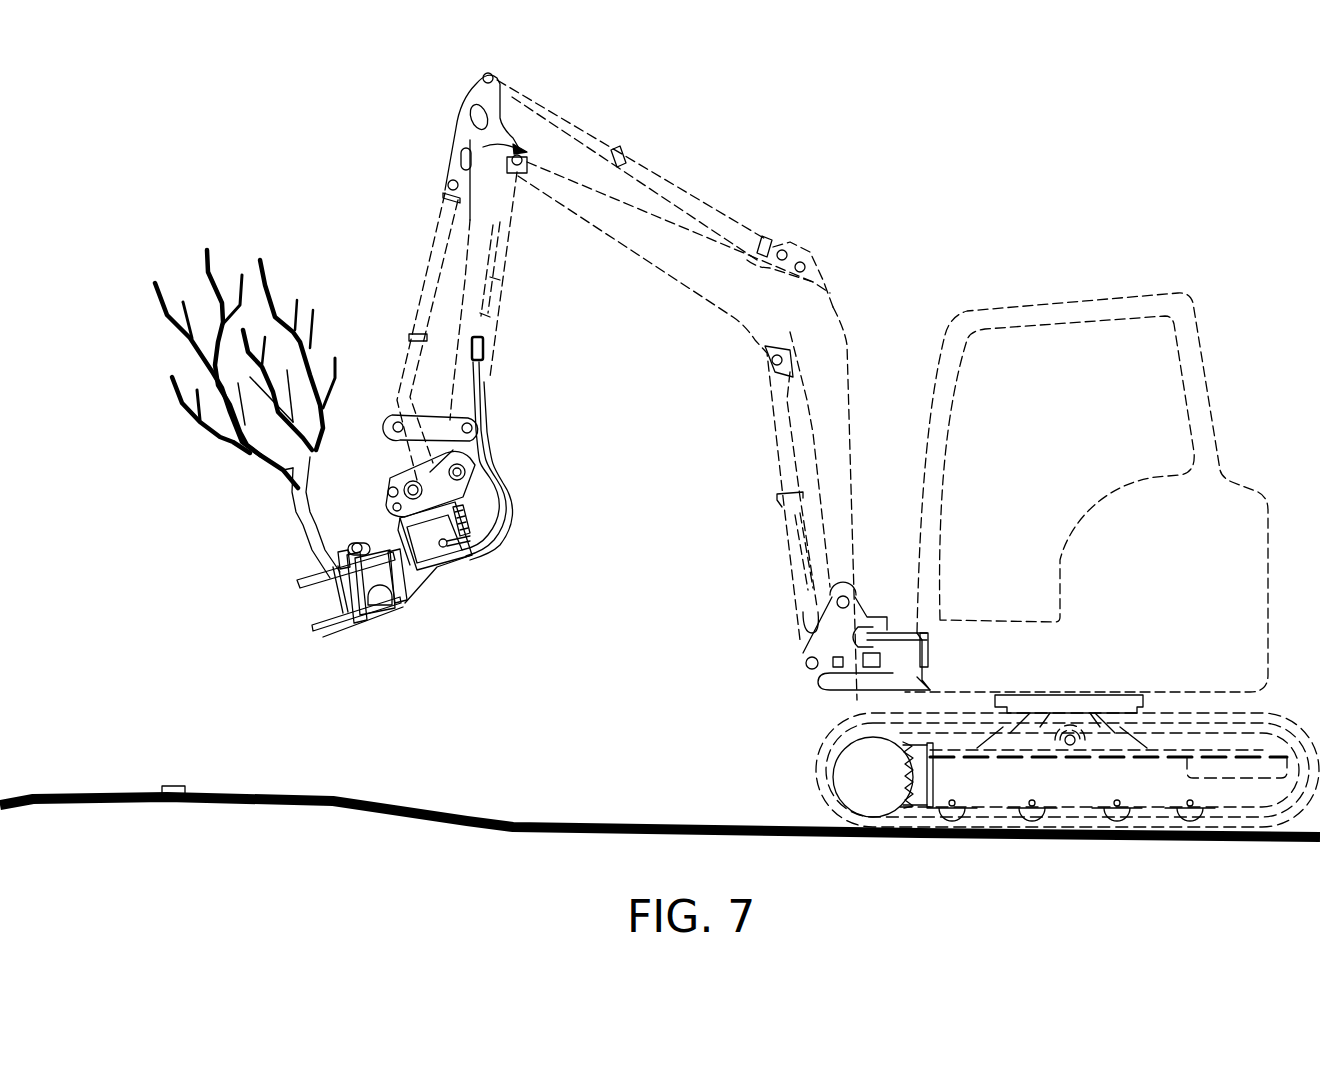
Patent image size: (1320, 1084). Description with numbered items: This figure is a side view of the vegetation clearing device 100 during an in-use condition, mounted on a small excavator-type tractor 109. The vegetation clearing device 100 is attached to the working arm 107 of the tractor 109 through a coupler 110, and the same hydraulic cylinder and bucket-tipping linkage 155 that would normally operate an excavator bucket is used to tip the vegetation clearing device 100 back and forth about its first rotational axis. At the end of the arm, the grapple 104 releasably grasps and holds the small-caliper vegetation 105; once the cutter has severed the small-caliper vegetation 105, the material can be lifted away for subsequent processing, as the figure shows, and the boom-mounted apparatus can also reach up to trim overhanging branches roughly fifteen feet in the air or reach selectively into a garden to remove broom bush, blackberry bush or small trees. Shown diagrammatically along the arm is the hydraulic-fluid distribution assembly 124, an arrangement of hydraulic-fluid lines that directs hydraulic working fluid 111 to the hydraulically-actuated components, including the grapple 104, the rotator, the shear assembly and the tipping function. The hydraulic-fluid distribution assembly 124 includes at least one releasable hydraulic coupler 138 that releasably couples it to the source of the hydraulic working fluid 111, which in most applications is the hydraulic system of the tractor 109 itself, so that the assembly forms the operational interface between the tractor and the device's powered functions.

The vegetation clearing device 100 is at (480, 603).
The grapple 104 is at (280, 661).
The small-caliper vegetation 105 is at (296, 520).
The working arm 107 is at (509, 254).
The tractor 109 is at (1062, 296).
The coupler 110 is at (418, 477).
The hydraulic working fluid 111 is at (500, 292).
The hydraulic-fluid distribution assembly 124 is at (536, 540).
The releasable hydraulic coupler 138 is at (483, 350).
The bucket-tipping linkage 155 is at (492, 408).